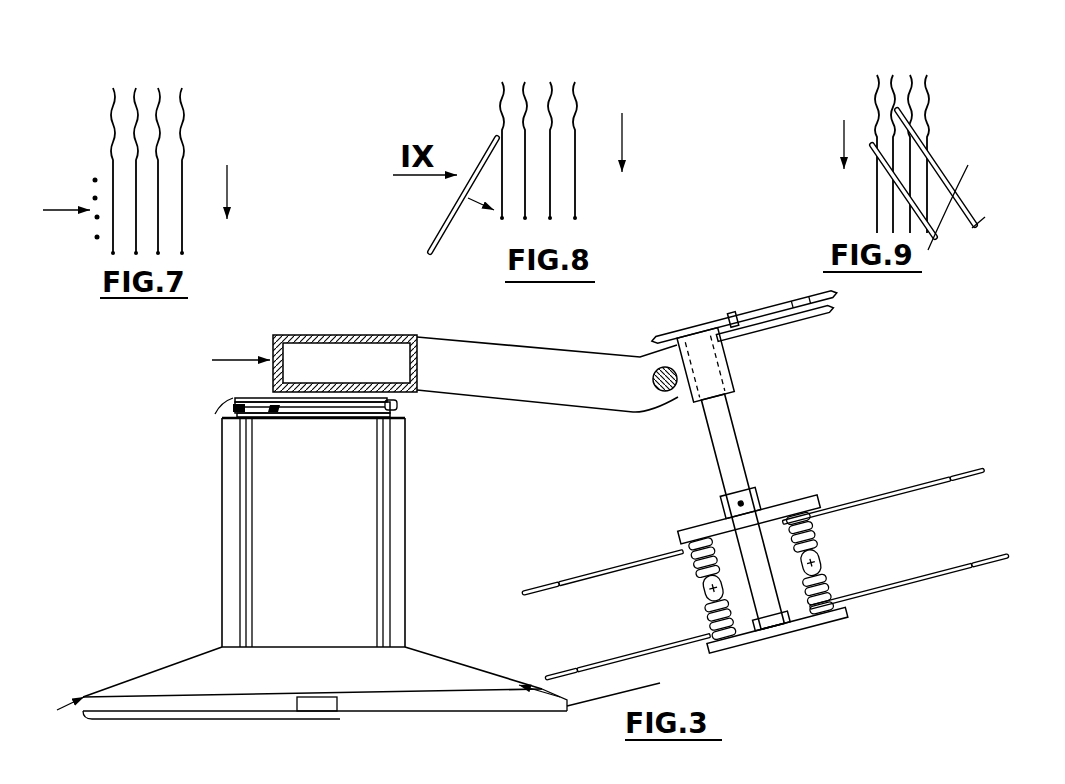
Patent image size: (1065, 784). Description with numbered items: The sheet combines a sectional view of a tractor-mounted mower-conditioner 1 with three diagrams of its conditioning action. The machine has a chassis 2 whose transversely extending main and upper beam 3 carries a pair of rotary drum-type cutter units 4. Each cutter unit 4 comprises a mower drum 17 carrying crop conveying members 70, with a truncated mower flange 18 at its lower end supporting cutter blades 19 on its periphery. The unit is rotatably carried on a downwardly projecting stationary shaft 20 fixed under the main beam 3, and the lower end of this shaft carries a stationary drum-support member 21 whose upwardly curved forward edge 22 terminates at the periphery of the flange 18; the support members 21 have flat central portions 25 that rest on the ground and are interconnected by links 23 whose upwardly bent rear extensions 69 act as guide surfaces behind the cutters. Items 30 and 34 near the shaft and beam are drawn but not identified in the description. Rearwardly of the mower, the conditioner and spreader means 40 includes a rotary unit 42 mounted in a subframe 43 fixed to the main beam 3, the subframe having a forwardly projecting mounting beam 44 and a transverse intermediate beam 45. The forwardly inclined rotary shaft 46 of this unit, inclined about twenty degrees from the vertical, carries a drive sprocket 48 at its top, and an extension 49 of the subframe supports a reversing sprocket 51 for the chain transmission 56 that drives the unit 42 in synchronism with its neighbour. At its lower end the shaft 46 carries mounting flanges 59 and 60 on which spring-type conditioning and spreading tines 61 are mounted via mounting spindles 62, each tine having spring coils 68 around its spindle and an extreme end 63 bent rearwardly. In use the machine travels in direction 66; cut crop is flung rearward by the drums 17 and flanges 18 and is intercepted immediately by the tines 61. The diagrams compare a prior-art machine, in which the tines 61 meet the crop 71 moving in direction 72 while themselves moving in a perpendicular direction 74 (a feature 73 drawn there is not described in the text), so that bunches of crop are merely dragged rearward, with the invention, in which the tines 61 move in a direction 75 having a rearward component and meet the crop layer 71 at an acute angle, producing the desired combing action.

In FIG. 3, the mower-conditioner 1 is at (203, 417).
In FIG. 3, the chassis 2 is at (229, 364).
In FIG. 3, the main and upper beam 3 is at (339, 335).
In FIG. 3, the rotary cutter unit 4 is at (223, 560).
In FIG. 3, the mower drum 17 is at (222, 500).
In FIG. 3, the mower flange 18 is at (155, 670).
In FIG. 3, the cutter blade 19 is at (72, 697).
In FIG. 3, the stationary shaft 20 is at (275, 394).
In FIG. 3, the stationary drum-support member 21 is at (228, 718).
In FIG. 3, the upwardly curved forward edge 22 is at (83, 720).
In FIG. 3, the link 23 is at (603, 703).
In FIG. 3, the flat central portion 25 is at (337, 717).
In FIG. 3, the slide rail 30 is at (395, 403).
In FIG. 3, the bracket 34 is at (215, 414).
In FIG. 3, the conditioner and spreader means 40 is at (978, 380).
In FIG. 3, the right-hand rotary conditioner and spreader unit 42 is at (741, 452).
In FIG. 3, the subframe 43 is at (573, 406).
In FIG. 3, the forwardly-projecting mounting beam 44 is at (515, 403).
In FIG. 3, the transverse intermediate beam 45 is at (658, 392).
In FIG. 3, the rotary shaft 46 is at (731, 427).
In FIG. 3, the drive sprocket 48 is at (676, 337).
In FIG. 3, the extension 49 is at (811, 318).
In FIG. 3, the reversing sprocket 51 is at (842, 294).
In FIG. 3, the chain transmission 56 is at (740, 314).
In FIG. 3, the mounting flange 59 is at (770, 502).
In FIG. 3, the mounting flange 60 is at (808, 617).
In FIG. 8, the conditioning and spreading tine 61 is at (437, 241).
In FIG. 9, the conditioning and spreading tine 61 is at (948, 177).
In FIG. 3, the conditioning and spreading tine 61 is at (615, 572).
In FIG. 3, the mounting spindle 62 is at (702, 592).
In FIG. 3, the extreme end 63 is at (548, 593).
In FIG. 3, the direction of travel 66 is at (135, 532).
In FIG. 3, the spring coil 68 is at (692, 575).
In FIG. 3, the upwardly bent rear extension 69 is at (658, 685).
In FIG. 3, the crop conveying member 70 is at (240, 588).
In FIG. 7, the crop 71 is at (182, 235).
In FIG. 8, the crop 71 is at (576, 200).
In FIG. 9, the crop 71 is at (877, 197).
In FIG. 7, the direction of movement of crop 72 is at (229, 182).
In FIG. 8, the direction of movement of crop 72 is at (624, 144).
In FIG. 9, the direction of movement of crop 72 is at (842, 141).
In FIG. 7, the fiber end 73 is at (95, 239).
In FIG. 7, the direction of tine movement 74 is at (73, 211).
In FIG. 8, the direction of tine movement 75 is at (473, 202).